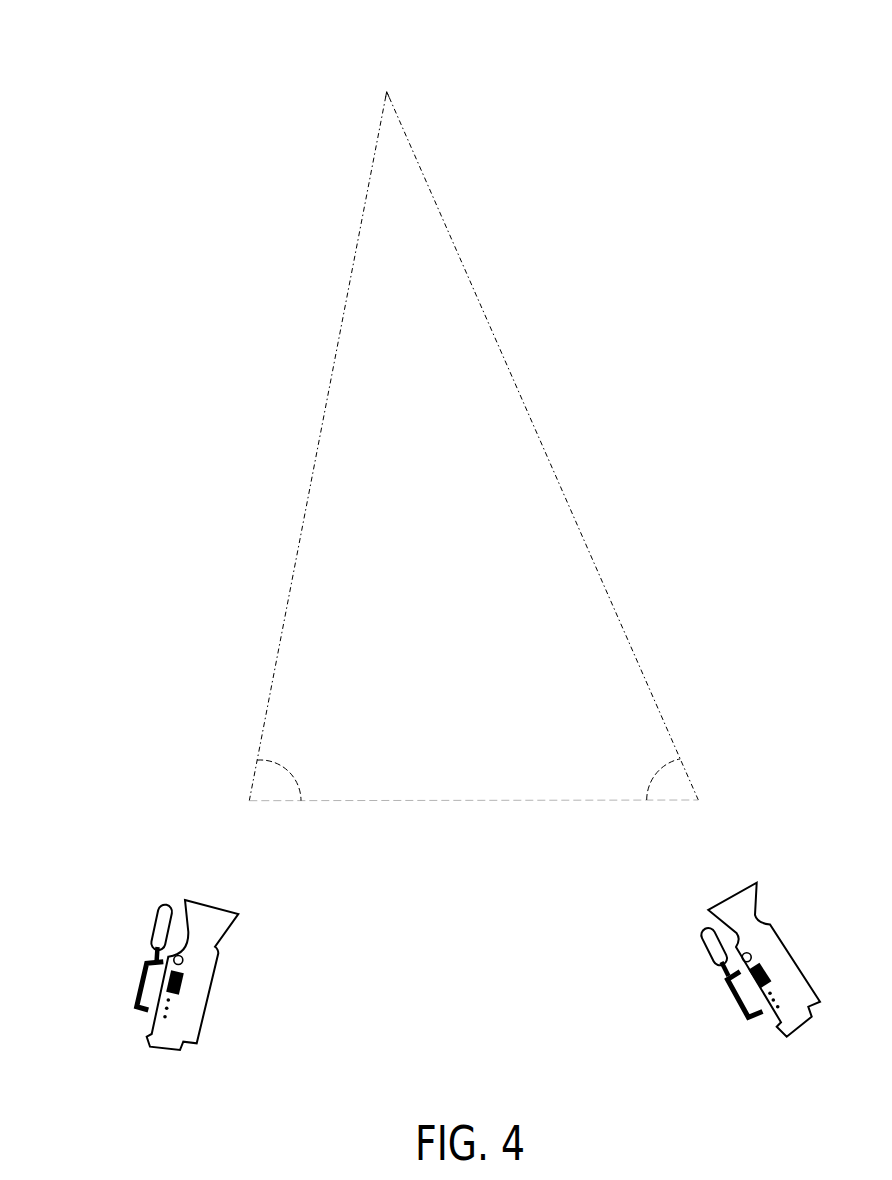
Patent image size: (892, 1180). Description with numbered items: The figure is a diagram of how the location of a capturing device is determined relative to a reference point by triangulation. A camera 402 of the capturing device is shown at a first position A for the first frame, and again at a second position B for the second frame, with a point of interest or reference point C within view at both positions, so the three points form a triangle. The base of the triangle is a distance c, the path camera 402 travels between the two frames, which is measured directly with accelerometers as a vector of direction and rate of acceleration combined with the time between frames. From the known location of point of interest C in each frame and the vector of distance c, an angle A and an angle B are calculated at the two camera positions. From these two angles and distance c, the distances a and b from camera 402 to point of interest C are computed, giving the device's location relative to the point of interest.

The camera 402 is at (133, 915).
The first position A is at (259, 809).
The second position B is at (689, 809).
The point of interest C is at (387, 54).
The distance a is at (317, 446).
The distance b is at (543, 446).
The distance c is at (473, 823).